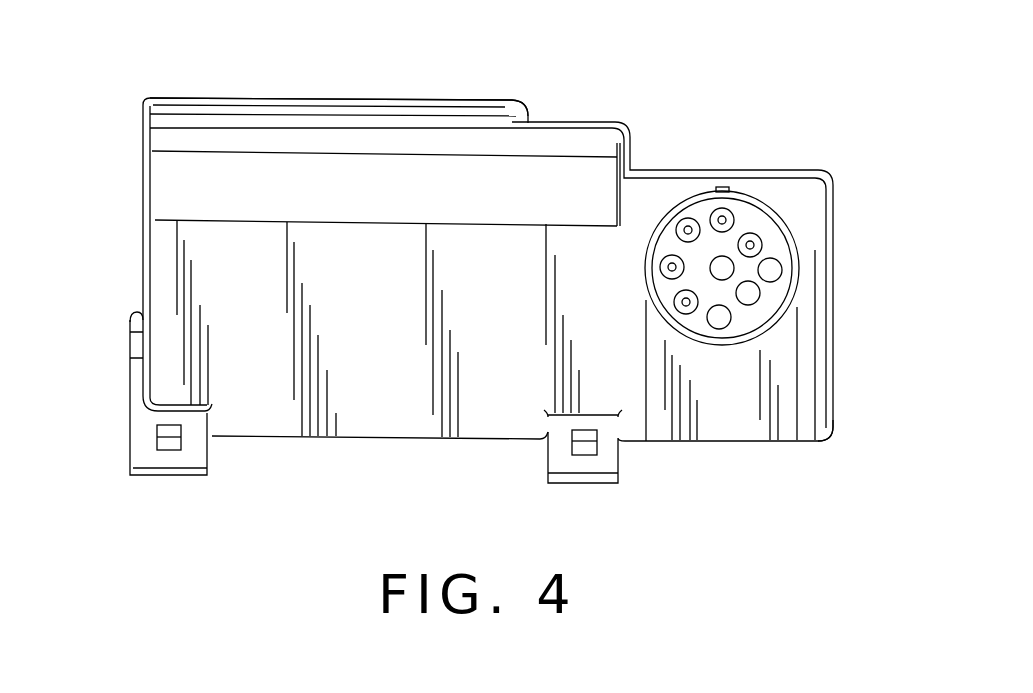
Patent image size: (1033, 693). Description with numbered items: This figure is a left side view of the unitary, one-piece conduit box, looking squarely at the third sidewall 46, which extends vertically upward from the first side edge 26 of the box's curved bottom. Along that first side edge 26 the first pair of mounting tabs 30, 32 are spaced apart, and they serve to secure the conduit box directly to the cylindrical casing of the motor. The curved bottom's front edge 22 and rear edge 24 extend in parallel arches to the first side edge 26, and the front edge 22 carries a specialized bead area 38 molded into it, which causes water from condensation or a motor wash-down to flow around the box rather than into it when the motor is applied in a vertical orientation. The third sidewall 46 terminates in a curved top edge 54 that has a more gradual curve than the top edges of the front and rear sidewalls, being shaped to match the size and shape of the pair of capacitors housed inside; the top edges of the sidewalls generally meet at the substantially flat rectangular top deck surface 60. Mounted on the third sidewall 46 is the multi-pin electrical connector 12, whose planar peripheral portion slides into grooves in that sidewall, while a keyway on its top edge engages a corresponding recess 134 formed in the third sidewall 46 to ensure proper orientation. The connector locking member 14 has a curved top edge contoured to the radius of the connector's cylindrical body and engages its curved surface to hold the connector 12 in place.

The connector 12 is at (773, 248).
The connector locking member 14 is at (728, 415).
The front edge 22 is at (130, 368).
The rear edge 24 is at (832, 440).
The first side edge 26 is at (310, 438).
The mounting tab 30 is at (148, 453).
The mounting tab 32 is at (607, 457).
The bead area 38 is at (137, 312).
The third sidewall 46 is at (368, 313).
The curved top edge 54 is at (422, 128).
The top deck surface 60 is at (348, 90).
The recess 134 is at (723, 187).